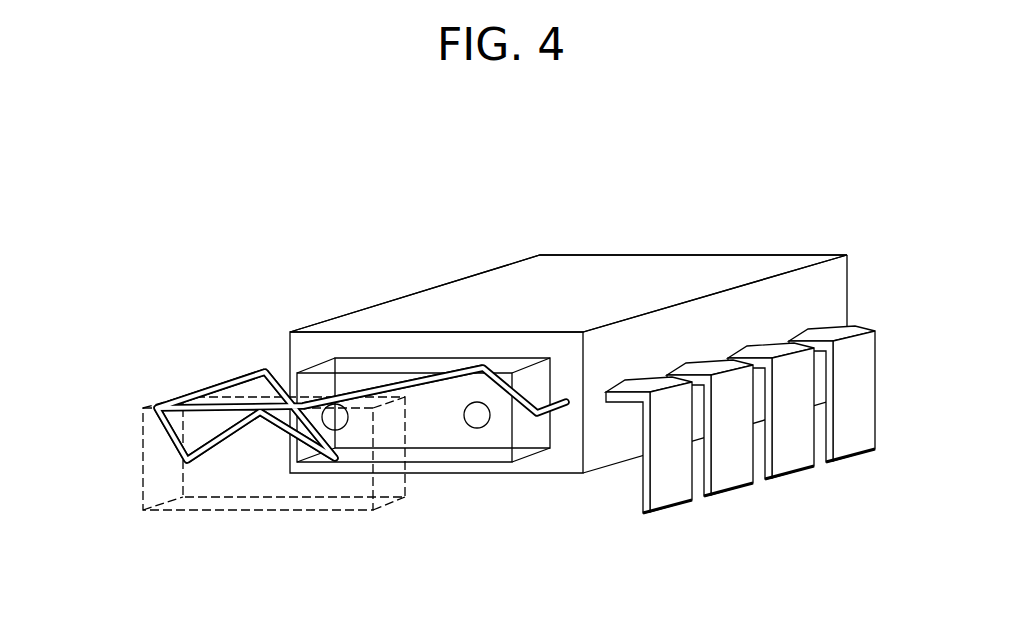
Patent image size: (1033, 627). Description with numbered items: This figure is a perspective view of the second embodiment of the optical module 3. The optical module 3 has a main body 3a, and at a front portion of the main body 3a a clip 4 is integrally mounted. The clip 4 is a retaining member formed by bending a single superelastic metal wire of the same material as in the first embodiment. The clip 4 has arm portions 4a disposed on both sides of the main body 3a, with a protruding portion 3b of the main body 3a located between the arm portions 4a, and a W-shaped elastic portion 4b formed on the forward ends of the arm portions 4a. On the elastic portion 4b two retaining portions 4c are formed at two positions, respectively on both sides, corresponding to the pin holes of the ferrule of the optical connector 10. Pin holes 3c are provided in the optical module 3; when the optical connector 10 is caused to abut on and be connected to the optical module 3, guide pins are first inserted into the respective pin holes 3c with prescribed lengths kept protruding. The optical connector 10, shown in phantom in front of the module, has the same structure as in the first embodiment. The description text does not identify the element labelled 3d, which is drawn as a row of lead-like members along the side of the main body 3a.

The optical module 3 is at (546, 254).
The main body 3a is at (648, 272).
The protruding portion 3b is at (427, 366).
The pin holes 3c is at (490, 426).
The lead terminals 3d is at (855, 438).
The clip 4 is at (323, 413).
The arm portions 4a is at (375, 391).
The elastic portion 4b is at (252, 420).
The retaining portions 4c is at (180, 462).
The optical connector 10 is at (192, 515).